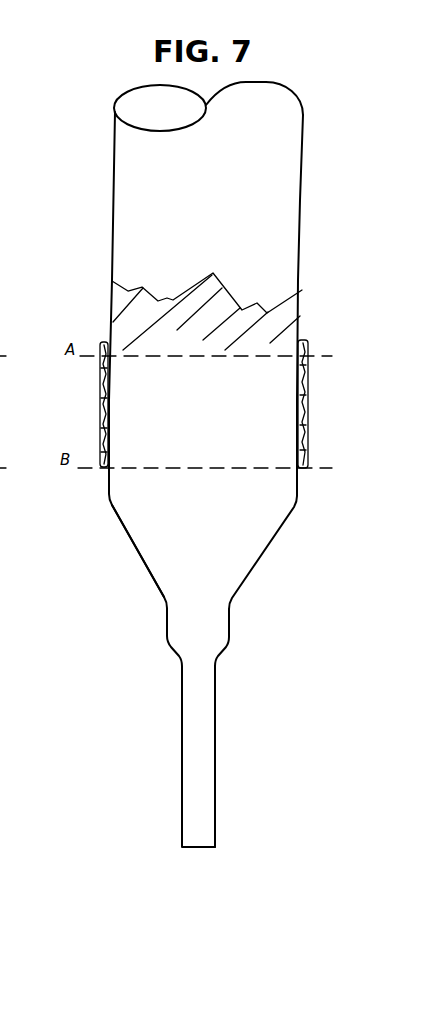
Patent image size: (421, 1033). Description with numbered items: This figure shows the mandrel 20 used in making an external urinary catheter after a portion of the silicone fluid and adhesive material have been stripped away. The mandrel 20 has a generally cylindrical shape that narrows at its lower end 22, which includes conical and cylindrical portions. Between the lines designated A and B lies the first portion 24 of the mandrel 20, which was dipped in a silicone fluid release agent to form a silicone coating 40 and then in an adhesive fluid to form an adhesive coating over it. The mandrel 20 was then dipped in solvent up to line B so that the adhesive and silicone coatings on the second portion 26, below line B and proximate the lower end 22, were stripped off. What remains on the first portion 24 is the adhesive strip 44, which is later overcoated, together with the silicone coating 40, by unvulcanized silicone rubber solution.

The mandrel 20 is at (108, 183).
The lower end 22 is at (238, 671).
The first portion 24 is at (332, 413).
The second portion 26 is at (146, 599).
The silicone coating 40 is at (108, 343).
The adhesive strip 44 is at (100, 410).